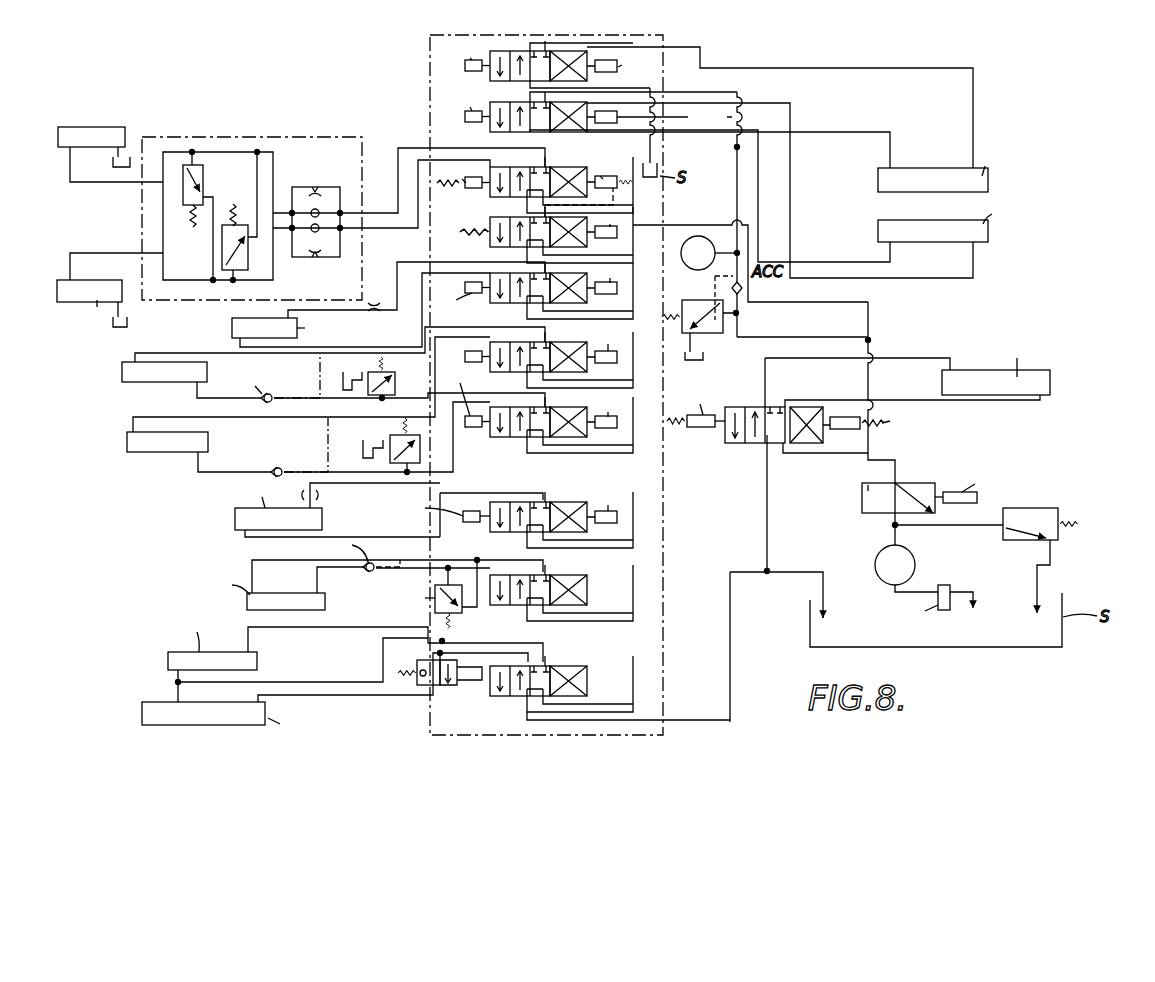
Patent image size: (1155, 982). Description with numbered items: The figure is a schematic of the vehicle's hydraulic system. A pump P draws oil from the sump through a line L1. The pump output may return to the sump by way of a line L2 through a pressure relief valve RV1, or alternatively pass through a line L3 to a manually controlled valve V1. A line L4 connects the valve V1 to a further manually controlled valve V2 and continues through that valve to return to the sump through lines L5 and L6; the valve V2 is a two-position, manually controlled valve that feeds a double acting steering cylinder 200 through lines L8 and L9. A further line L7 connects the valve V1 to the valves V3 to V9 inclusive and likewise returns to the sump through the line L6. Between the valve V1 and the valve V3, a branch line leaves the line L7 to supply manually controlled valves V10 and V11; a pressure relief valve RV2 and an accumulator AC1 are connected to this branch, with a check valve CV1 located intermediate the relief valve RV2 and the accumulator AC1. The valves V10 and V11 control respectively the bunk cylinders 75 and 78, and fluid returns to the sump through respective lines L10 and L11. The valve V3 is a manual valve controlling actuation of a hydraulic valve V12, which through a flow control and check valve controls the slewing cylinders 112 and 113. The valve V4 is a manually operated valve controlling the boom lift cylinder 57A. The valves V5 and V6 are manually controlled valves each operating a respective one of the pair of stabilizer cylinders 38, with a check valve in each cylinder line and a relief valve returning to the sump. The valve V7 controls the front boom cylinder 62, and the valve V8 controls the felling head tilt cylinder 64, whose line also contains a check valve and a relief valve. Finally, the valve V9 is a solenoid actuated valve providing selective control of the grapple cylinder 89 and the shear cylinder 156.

The slewing cylinder 113 is at (63, 127).
The slewing cylinder 112 is at (88, 283).
The boom lift cylinder 57A is at (232, 328).
The stabilizer cylinders 38 is at (122, 362).
The front boom cylinder 62 is at (322, 520).
The felling head tilt cylinder 64 is at (290, 593).
The grapple cylinder 89 is at (238, 637).
The shear cylinder 156 is at (265, 710).
The bunk cylinder 78 is at (948, 168).
The bunk cylinder 75 is at (952, 222).
The steering cylinder 200 is at (977, 370).
The manually controlled valve V1 is at (940, 483).
The manually controlled valve V2 is at (822, 440).
The manual valve V3 is at (620, 252).
The manually operated valve V4 is at (590, 297).
The manually controlled valve V5 is at (590, 367).
The manually controlled valve V6 is at (590, 432).
The manually operated valve V7 is at (572, 505).
The valve V8 is at (585, 582).
The solenoid actuated valve V9 is at (572, 670).
The manually controlled valve V10 is at (606, 80).
The manually controlled valve V11 is at (583, 130).
The hydraulic valve V12 is at (600, 200).
The pressure relief valve RV1 is at (1037, 508).
The pressure relief valve RV2 is at (705, 303).
The check valve CV1 is at (745, 290).
The accumulator AC1 is at (718, 216).
The pump P is at (916, 565).
The line L1 is at (960, 592).
The line L2 is at (988, 525).
The line L3 is at (900, 540).
The line L4 is at (895, 470).
The line L5 is at (768, 505).
The line L6 is at (805, 572).
The line L7 is at (872, 322).
The line L8 is at (972, 404).
The line L9 is at (920, 358).
The line L10 is at (705, 57).
The line L11 is at (655, 160).